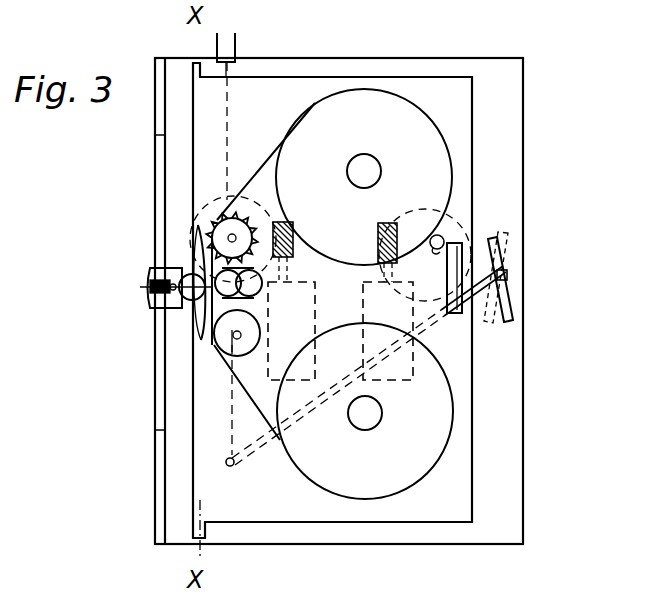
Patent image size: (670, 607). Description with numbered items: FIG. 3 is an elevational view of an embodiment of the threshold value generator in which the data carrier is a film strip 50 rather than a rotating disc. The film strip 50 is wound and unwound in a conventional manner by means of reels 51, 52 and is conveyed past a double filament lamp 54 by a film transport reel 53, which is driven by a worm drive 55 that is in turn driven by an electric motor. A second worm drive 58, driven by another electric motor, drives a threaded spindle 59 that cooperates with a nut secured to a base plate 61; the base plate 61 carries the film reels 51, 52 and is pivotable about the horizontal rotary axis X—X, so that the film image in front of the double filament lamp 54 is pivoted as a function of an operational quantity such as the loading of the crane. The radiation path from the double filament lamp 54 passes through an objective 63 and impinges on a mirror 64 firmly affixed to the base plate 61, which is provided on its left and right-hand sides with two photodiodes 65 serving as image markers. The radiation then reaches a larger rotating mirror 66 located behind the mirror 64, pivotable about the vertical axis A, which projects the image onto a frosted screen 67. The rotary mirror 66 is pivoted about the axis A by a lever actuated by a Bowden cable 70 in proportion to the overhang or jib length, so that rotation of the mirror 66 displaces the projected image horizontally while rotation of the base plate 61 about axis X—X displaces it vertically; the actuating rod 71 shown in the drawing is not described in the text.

The film strip 50 is at (248, 198).
The reel 51 is at (406, 139).
The reel 52 is at (420, 449).
The film transport reel 53 is at (199, 228).
The double filament lamp 54 is at (150, 292).
The worm drive 55 is at (283, 222).
The second worm drive 58 is at (389, 222).
The threaded spindle 59 is at (443, 238).
The base plate 61 is at (437, 90).
The objective 63 is at (212, 290).
The mirror 64 is at (462, 258).
The photodiodes 65 is at (462, 250).
The rotating mirror 66 is at (510, 316).
The frosted screen 67 is at (162, 395).
The Bowden cable 70 is at (228, 72).
The actuating rod 71 is at (257, 455).
The vertical axis A is at (513, 277).